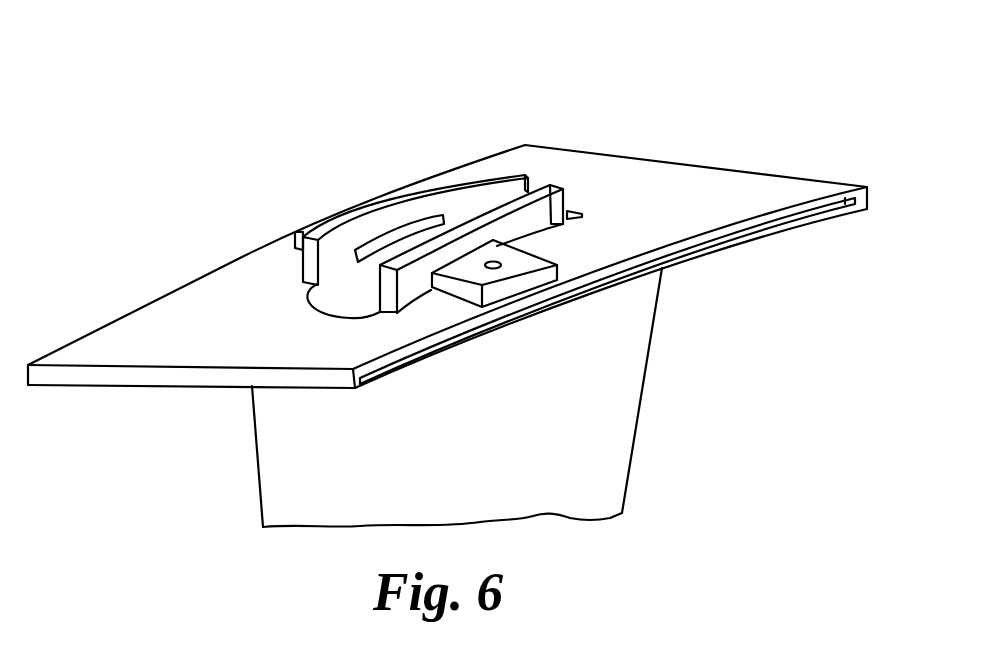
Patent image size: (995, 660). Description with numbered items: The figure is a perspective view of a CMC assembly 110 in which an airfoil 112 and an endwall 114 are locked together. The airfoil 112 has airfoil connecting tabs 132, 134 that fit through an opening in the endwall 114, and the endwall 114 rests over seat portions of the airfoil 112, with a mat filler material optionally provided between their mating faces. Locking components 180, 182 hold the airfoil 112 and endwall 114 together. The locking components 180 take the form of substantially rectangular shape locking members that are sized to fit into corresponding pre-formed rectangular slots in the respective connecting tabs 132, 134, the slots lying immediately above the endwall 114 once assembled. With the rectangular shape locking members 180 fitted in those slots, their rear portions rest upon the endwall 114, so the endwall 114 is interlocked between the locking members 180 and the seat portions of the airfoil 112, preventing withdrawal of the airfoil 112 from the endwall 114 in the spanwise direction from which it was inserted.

The CMC assembly 110 is at (618, 96).
The airfoil 112 is at (642, 422).
The endwall 114 is at (770, 171).
The airfoil connecting tab 132 is at (530, 180).
The airfoil connecting tab 134 is at (567, 195).
The rectangular shape locking member 180 is at (309, 232).
The locking component 182 is at (493, 261).